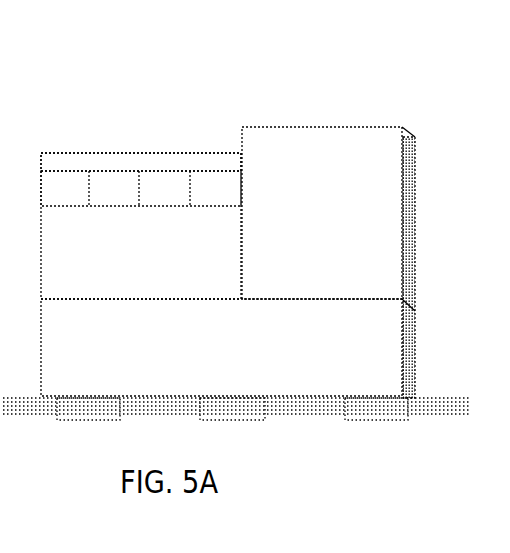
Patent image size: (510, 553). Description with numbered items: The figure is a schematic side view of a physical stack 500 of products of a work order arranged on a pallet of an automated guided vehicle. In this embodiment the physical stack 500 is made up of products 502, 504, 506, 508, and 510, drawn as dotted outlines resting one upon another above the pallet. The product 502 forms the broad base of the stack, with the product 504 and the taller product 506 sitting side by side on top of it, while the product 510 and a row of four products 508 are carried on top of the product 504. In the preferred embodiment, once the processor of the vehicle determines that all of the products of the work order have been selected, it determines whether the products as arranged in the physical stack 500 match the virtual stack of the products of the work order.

The physical stack 500 is at (146, 58).
The product 502 is at (221, 347).
The product 504 is at (141, 226).
The product 506 is at (328, 262).
The product 508 is at (141, 188).
The product 510 is at (141, 162).